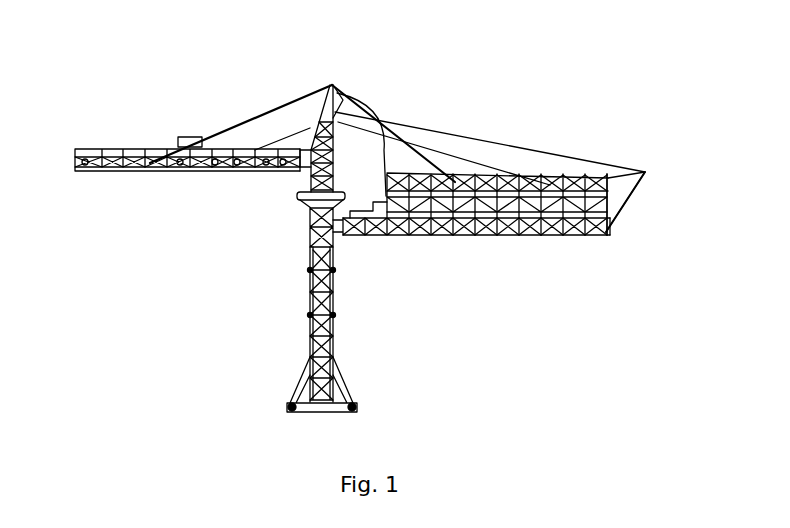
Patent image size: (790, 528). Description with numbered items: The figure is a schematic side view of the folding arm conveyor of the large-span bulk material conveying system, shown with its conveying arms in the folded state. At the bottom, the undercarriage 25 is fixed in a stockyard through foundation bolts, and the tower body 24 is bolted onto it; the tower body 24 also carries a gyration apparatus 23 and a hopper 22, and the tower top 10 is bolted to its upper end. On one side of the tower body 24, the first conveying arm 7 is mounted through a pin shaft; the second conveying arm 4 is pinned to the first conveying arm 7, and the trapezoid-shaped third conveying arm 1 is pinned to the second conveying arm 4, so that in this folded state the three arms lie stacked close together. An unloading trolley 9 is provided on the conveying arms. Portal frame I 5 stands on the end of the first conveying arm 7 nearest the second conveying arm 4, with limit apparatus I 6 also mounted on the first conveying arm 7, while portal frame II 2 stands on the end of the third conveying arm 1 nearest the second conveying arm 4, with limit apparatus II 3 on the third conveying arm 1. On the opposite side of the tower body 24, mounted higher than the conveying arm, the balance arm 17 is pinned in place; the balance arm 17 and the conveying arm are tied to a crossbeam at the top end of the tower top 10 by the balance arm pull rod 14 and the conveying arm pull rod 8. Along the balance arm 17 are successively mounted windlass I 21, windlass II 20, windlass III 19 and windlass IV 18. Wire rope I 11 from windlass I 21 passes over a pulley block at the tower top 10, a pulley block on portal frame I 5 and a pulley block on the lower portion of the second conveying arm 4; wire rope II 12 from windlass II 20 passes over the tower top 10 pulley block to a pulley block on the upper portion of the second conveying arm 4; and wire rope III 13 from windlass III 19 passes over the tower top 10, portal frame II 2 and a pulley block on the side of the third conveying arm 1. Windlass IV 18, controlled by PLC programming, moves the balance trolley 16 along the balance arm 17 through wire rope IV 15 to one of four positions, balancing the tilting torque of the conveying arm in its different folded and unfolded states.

The third conveying arm 1 is at (567, 185).
The portal frame II 2 is at (378, 202).
The limit apparatus II 3 is at (397, 190).
The second conveying arm 4 is at (422, 237).
The portal frame I 5 is at (646, 173).
The limit apparatus I 6 is at (612, 236).
The first conveying arm 7 is at (568, 238).
The conveying arm pull rod 8 is at (478, 237).
The unloading trolley 9 is at (373, 237).
The tower top 10 is at (335, 88).
The wire rope I 11 is at (311, 118).
The wire rope II 12 is at (285, 150).
The wire rope III 13 is at (270, 147).
The balance arm pull rod 14 is at (208, 137).
The wire rope IV 15 is at (140, 163).
The balance trolley 16 is at (180, 140).
The balance arm 17 is at (147, 168).
The windlass IV 18 is at (215, 168).
The windlass III 19 is at (233, 168).
The windlass II 20 is at (255, 168).
The windlass I 21 is at (277, 168).
The hopper 22 is at (307, 207).
The gyration apparatus 23 is at (308, 247).
The tower body 24 is at (310, 292).
The undercarriage 25 is at (300, 380).